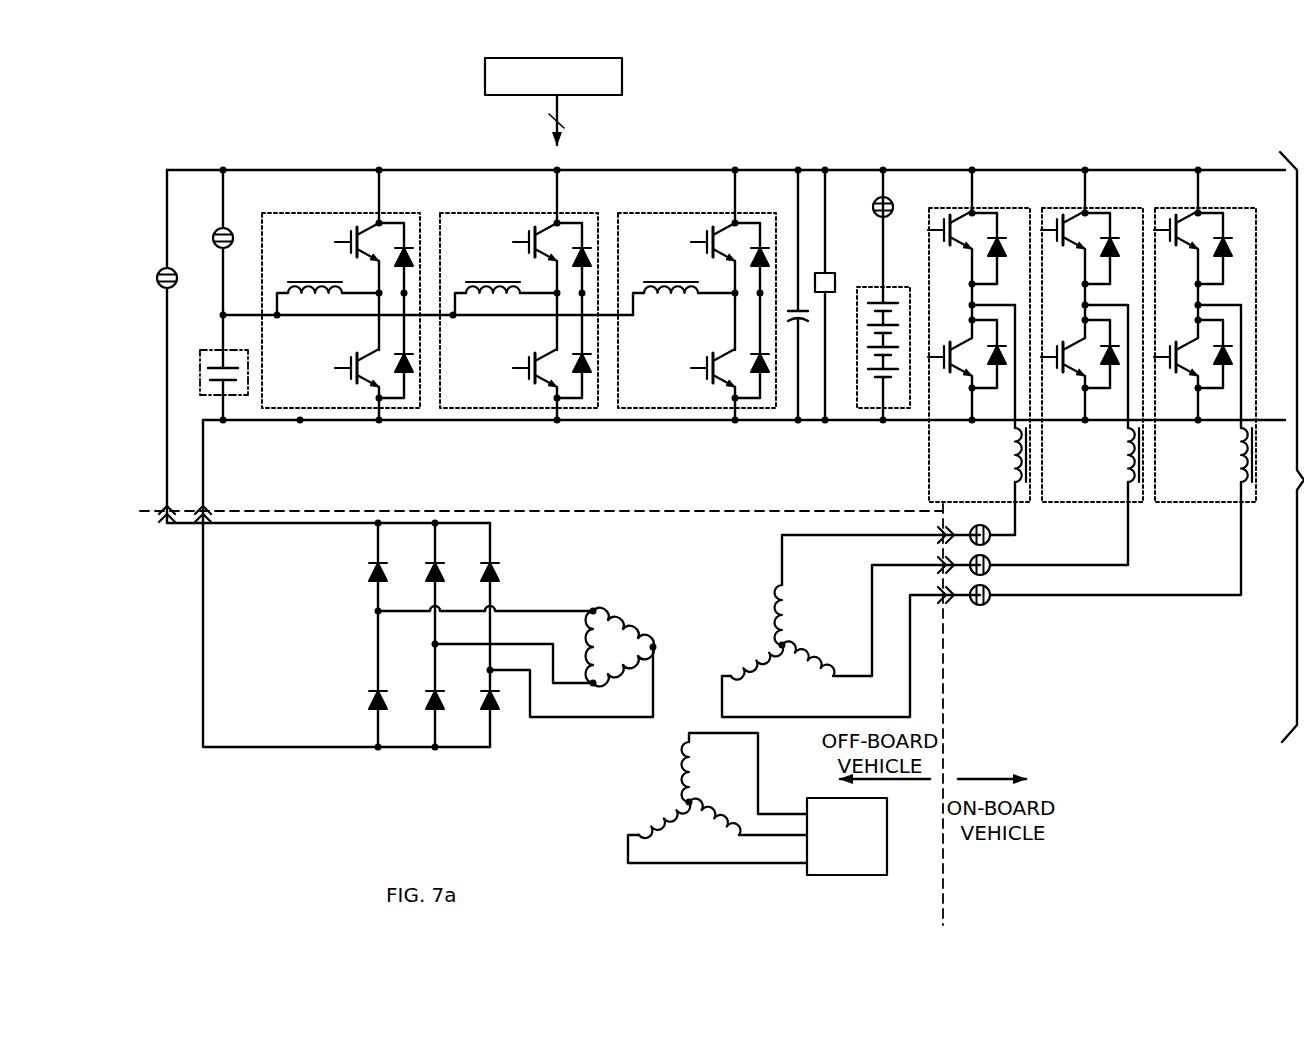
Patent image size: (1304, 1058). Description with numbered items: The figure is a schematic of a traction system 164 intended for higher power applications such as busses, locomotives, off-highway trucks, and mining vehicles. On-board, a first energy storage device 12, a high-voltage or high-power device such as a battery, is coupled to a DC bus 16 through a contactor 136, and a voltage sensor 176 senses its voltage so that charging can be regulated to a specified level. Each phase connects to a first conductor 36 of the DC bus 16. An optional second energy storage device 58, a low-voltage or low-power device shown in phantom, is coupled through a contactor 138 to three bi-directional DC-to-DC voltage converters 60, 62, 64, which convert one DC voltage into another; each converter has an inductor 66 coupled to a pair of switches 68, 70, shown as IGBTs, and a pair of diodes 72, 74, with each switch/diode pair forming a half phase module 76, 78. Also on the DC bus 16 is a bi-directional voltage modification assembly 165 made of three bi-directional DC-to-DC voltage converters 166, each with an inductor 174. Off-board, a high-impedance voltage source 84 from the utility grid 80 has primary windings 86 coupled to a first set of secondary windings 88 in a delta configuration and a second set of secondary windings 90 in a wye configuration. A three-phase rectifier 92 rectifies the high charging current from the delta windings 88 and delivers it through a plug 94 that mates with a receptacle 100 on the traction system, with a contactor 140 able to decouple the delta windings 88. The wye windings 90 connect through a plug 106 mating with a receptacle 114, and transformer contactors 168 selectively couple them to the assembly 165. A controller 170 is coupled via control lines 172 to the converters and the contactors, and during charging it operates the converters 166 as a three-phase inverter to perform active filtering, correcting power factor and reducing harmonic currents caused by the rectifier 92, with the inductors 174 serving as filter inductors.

The first energy storage device 12 is at (868, 290).
The DC bus 16 is at (930, 170).
The first conductor 36 is at (1262, 170).
The second energy storage device 58 is at (226, 396).
The bi-directional DC-to-DC voltage converter 60 is at (320, 211).
The bi-directional DC-to-DC voltage converter 62 is at (498, 211).
The bi-directional DC-to-DC voltage converter 64 is at (676, 211).
The inductor 66 is at (340, 302).
The switch 68 is at (348, 243).
The switch 70 is at (348, 369).
The diode 72 is at (410, 250).
The diode 74 is at (402, 352).
The half phase module 76 is at (346, 257).
The half phase module 78 is at (346, 382).
The utility grid 80 is at (887, 817).
The high-impedance voltage source 84 is at (764, 699).
The primary windings 86 is at (700, 805).
The first set of secondary windings 88 is at (587, 626).
The second set of secondary windings 90 is at (790, 613).
The three-phase rectifier 92 is at (408, 757).
The plug 94 is at (163, 524).
The receptacle 100 is at (163, 500).
The plug 106 is at (935, 534).
The receptacle 114 is at (949, 609).
The contactor 136 is at (868, 200).
The contactor 138 is at (213, 225).
The contactor 140 is at (146, 282).
The traction system 164 is at (218, 100).
The bi-directional voltage modification assembly 165 is at (1000, 158).
The bi-directional DC-to-DC voltage converter 166 is at (955, 206).
The transformer contactor 168 is at (991, 541).
The controller 170 is at (485, 82).
The control lines 172 is at (552, 112).
The inductor 174 is at (1016, 449).
The voltage sensor 176 is at (829, 272).